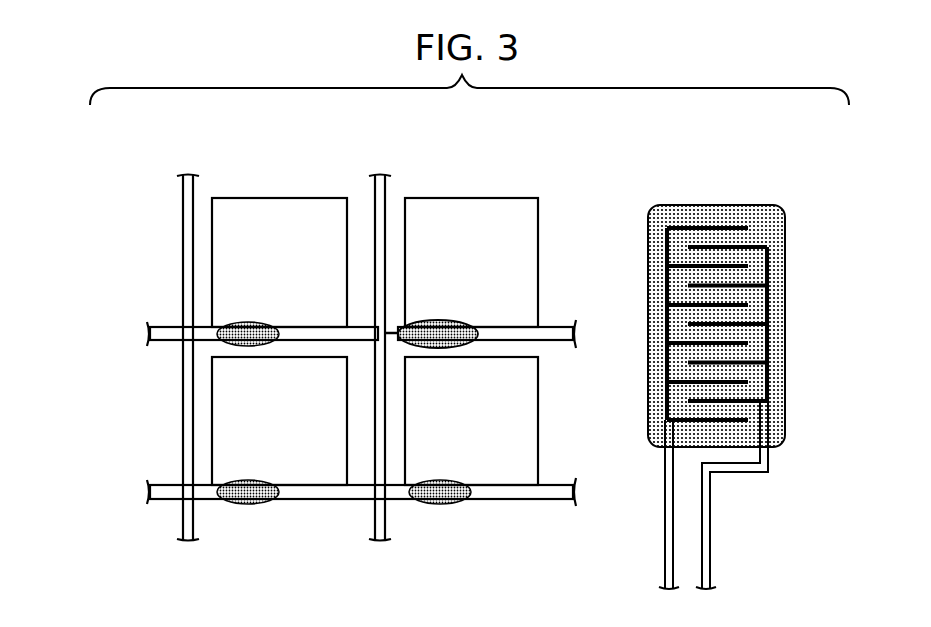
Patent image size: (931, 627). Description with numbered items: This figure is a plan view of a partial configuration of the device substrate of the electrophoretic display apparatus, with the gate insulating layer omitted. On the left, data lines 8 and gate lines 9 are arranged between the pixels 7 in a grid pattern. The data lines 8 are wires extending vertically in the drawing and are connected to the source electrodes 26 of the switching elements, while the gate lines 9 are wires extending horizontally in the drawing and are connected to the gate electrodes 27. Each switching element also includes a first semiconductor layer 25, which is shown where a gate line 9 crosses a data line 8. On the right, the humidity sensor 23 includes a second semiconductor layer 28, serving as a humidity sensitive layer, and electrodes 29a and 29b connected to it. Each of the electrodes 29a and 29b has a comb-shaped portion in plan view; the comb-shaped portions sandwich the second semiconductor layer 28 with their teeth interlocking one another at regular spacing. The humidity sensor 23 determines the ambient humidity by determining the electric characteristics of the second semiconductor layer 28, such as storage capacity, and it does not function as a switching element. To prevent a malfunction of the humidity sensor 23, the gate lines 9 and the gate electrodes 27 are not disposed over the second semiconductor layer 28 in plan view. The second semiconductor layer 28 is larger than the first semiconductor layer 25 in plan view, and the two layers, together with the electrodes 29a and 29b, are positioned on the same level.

The pixel 7 is at (280, 210).
The data line 8 is at (187, 235).
The gate line 9 is at (170, 333).
The humidity sensor 23 is at (684, 190).
The first semiconductor layer 25 is at (470, 325).
The source electrode 26 is at (390, 333).
The gate electrode 27 is at (232, 335).
The second semiconductor layer 28 is at (772, 218).
The electrode 29a is at (665, 547).
The electrode 29b is at (710, 520).